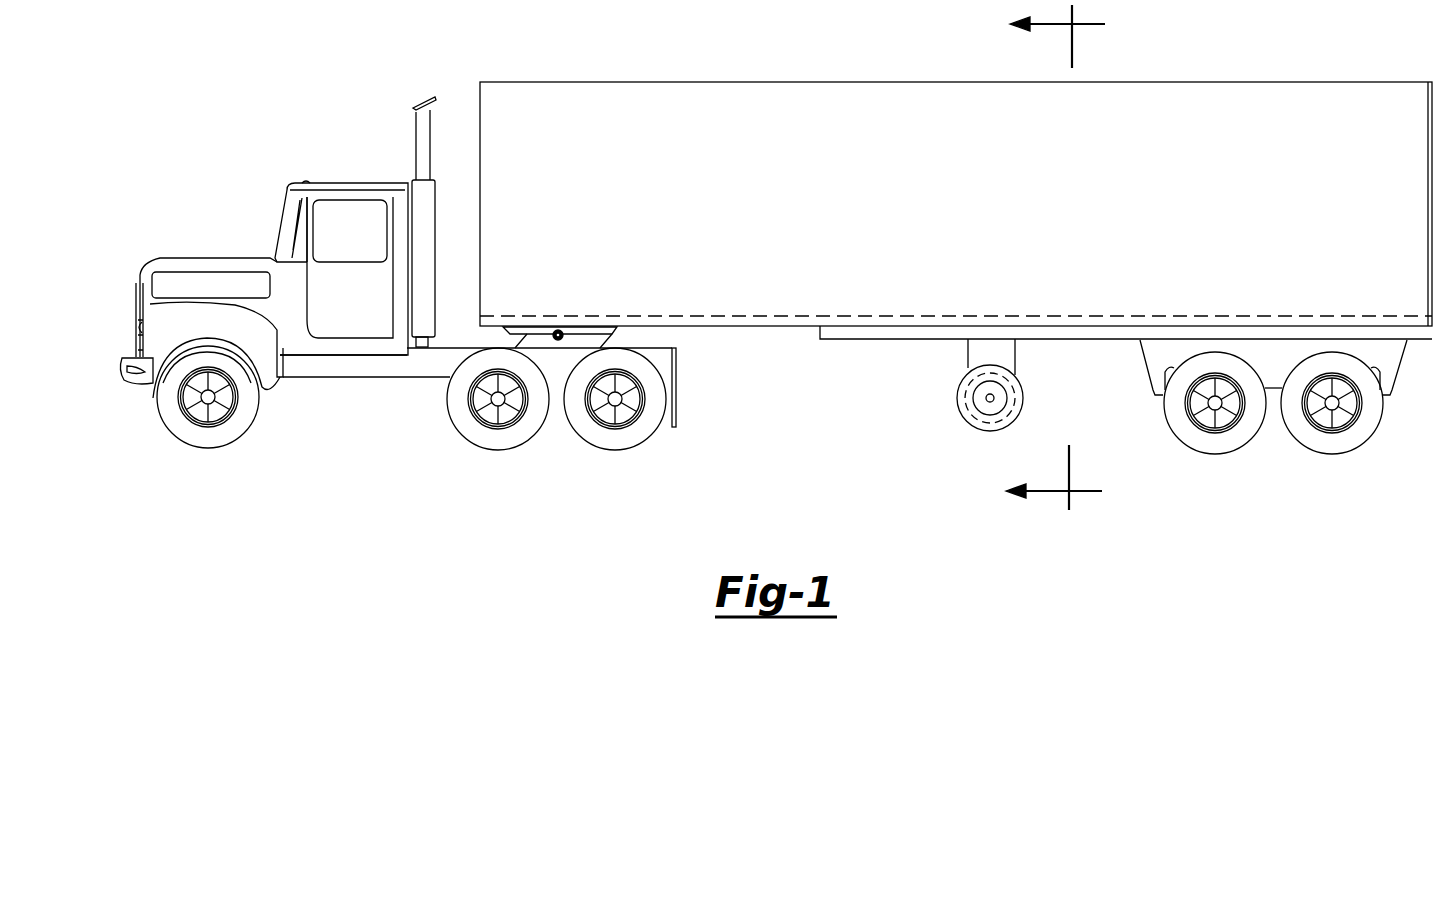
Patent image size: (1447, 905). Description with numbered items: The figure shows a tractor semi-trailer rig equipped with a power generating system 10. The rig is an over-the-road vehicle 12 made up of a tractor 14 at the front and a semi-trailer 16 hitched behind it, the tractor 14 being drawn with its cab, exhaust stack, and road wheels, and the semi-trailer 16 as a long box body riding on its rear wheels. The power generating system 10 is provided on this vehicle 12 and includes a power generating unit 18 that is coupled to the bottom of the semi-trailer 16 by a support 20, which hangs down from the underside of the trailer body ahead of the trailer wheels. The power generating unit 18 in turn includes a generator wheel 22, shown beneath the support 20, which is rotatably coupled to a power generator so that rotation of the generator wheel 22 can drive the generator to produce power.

The power generating system 10 is at (827, 378).
The over-the-road (OTR) vehicle 12 is at (336, 136).
The tractor 14 is at (329, 428).
The semi-trailer 16 is at (781, 58).
The power generating unit 18 is at (1046, 373).
The support 20 is at (975, 352).
The generator wheel 22 is at (978, 429).